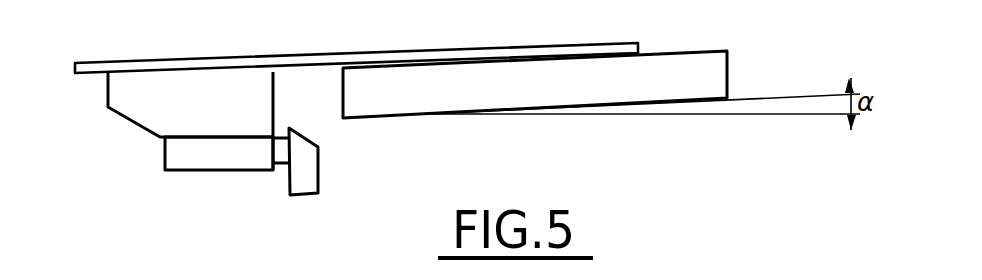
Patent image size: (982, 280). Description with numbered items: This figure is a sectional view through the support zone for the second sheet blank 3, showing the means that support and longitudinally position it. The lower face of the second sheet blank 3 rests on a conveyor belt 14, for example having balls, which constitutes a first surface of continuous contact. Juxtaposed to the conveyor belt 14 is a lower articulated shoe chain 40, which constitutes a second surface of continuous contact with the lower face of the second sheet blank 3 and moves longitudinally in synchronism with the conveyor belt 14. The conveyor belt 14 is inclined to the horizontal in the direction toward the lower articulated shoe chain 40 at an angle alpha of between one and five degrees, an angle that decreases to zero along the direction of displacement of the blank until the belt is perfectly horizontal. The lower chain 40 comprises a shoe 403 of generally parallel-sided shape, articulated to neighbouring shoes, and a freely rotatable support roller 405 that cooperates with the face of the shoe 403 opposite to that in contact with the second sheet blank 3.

The second sheet blank 3 is at (363, 55).
The conveyor belt 14 is at (536, 80).
The lower articulated shoe chain 40 is at (194, 153).
The shoe 403 is at (238, 111).
The support roller 405 is at (193, 157).